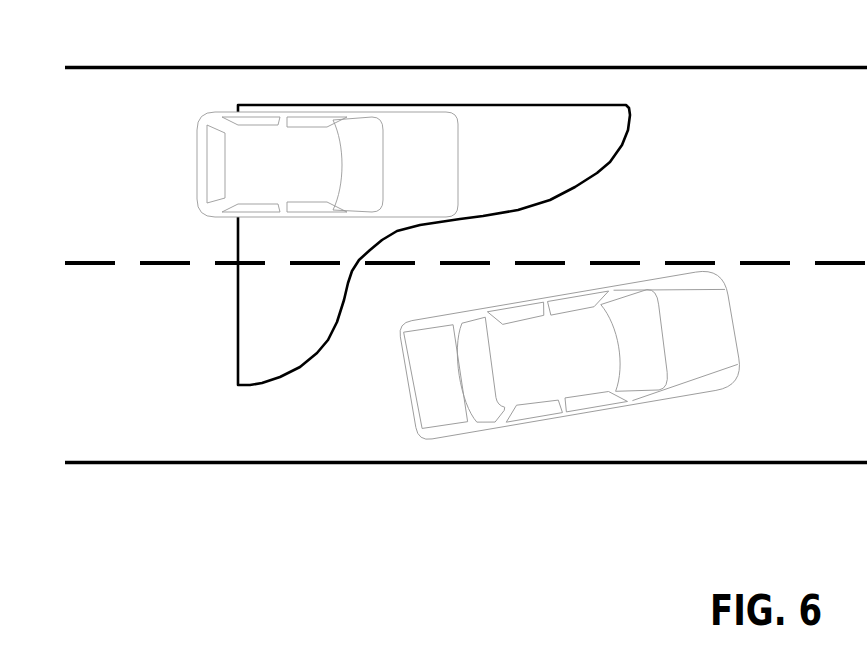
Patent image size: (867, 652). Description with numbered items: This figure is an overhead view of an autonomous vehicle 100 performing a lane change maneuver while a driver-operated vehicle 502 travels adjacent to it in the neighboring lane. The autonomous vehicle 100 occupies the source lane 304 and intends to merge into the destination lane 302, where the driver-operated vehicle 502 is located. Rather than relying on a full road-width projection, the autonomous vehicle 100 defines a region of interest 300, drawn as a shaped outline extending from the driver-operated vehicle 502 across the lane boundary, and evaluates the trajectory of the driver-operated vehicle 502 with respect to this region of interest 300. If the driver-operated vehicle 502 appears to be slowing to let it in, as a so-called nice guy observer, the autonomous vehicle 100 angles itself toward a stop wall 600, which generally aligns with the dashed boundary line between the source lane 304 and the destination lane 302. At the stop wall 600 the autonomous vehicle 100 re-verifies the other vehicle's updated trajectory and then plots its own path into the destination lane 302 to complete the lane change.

The autonomous vehicle 100 is at (577, 413).
The region of interest 300 is at (533, 104).
The destination lane 302 is at (838, 150).
The source lane 304 is at (838, 376).
The driver-operated vehicle 502 is at (327, 113).
The stop wall 600 is at (158, 262).